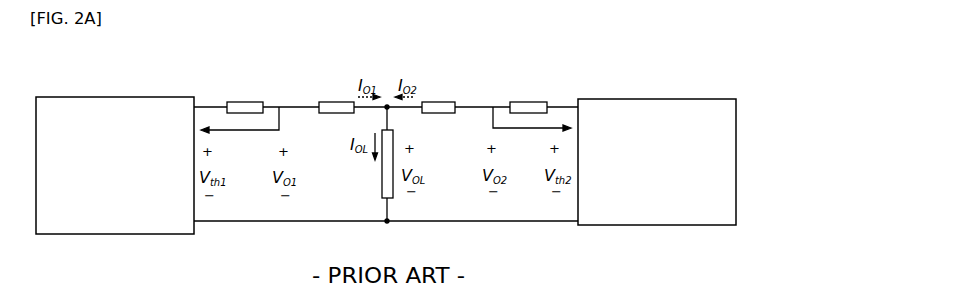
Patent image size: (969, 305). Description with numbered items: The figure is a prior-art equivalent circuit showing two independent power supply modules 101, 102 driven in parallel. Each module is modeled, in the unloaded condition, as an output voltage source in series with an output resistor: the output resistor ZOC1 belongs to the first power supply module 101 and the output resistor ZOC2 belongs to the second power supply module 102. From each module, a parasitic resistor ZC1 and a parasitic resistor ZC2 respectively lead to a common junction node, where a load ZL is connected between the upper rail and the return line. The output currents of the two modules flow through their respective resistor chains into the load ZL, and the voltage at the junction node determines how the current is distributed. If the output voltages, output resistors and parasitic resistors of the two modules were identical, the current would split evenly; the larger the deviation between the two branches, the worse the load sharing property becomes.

The power supply module 101 is at (117, 97).
The power supply module 102 is at (660, 99).
The output resistor ZOC1 is at (244, 94).
The parasitic resistor ZC1 is at (336, 94).
The parasitic resistor ZC2 is at (438, 94).
The output resistor ZOC2 is at (528, 94).
The load impedance ZL is at (374, 164).